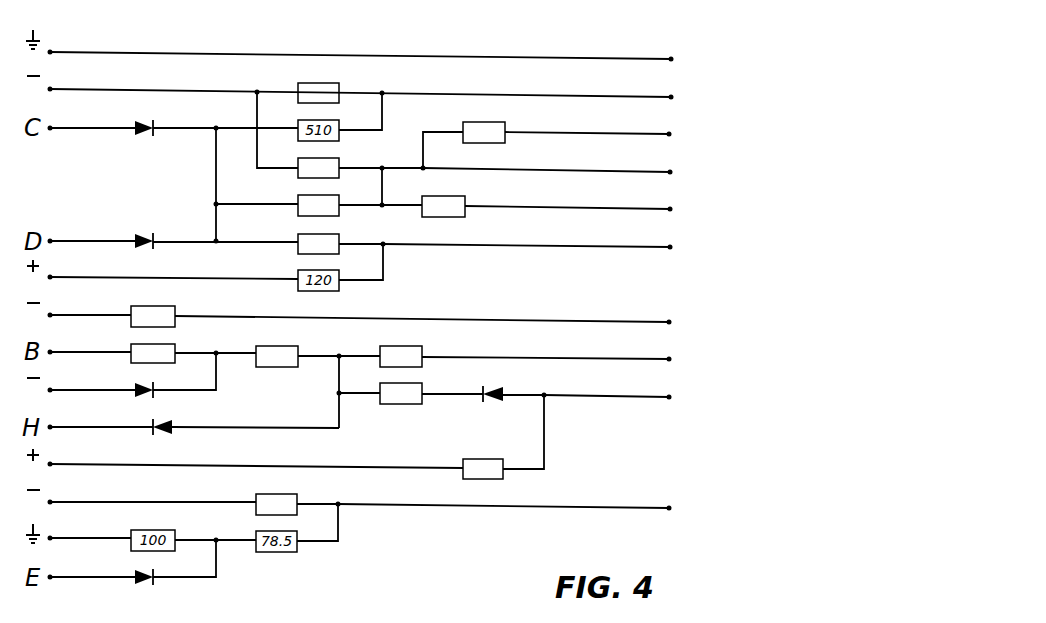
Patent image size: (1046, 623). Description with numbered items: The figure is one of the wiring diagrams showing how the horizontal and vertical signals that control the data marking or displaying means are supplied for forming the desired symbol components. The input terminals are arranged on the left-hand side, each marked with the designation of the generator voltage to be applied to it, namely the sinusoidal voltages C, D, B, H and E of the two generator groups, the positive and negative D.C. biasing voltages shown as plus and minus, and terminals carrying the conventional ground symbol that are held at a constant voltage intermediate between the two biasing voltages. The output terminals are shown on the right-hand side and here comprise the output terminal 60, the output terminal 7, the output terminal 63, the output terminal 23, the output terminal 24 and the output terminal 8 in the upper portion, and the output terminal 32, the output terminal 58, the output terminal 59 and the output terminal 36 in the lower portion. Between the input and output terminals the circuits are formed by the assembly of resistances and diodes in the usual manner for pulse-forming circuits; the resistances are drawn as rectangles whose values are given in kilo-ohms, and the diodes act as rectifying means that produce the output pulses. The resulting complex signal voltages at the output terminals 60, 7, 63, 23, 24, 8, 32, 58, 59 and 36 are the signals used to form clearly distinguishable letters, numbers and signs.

The output terminal 60 is at (381, 50).
The output terminal 7 is at (375, 87).
The output terminal 63 is at (567, 141).
The output terminal 23 is at (506, 165).
The output terminal 24 is at (464, 202).
The output terminal 8 is at (374, 252).
The output terminal 32 is at (381, 312).
The output terminal 58 is at (381, 350).
The output terminal 59 is at (525, 417).
The output terminal 36 is at (381, 512).